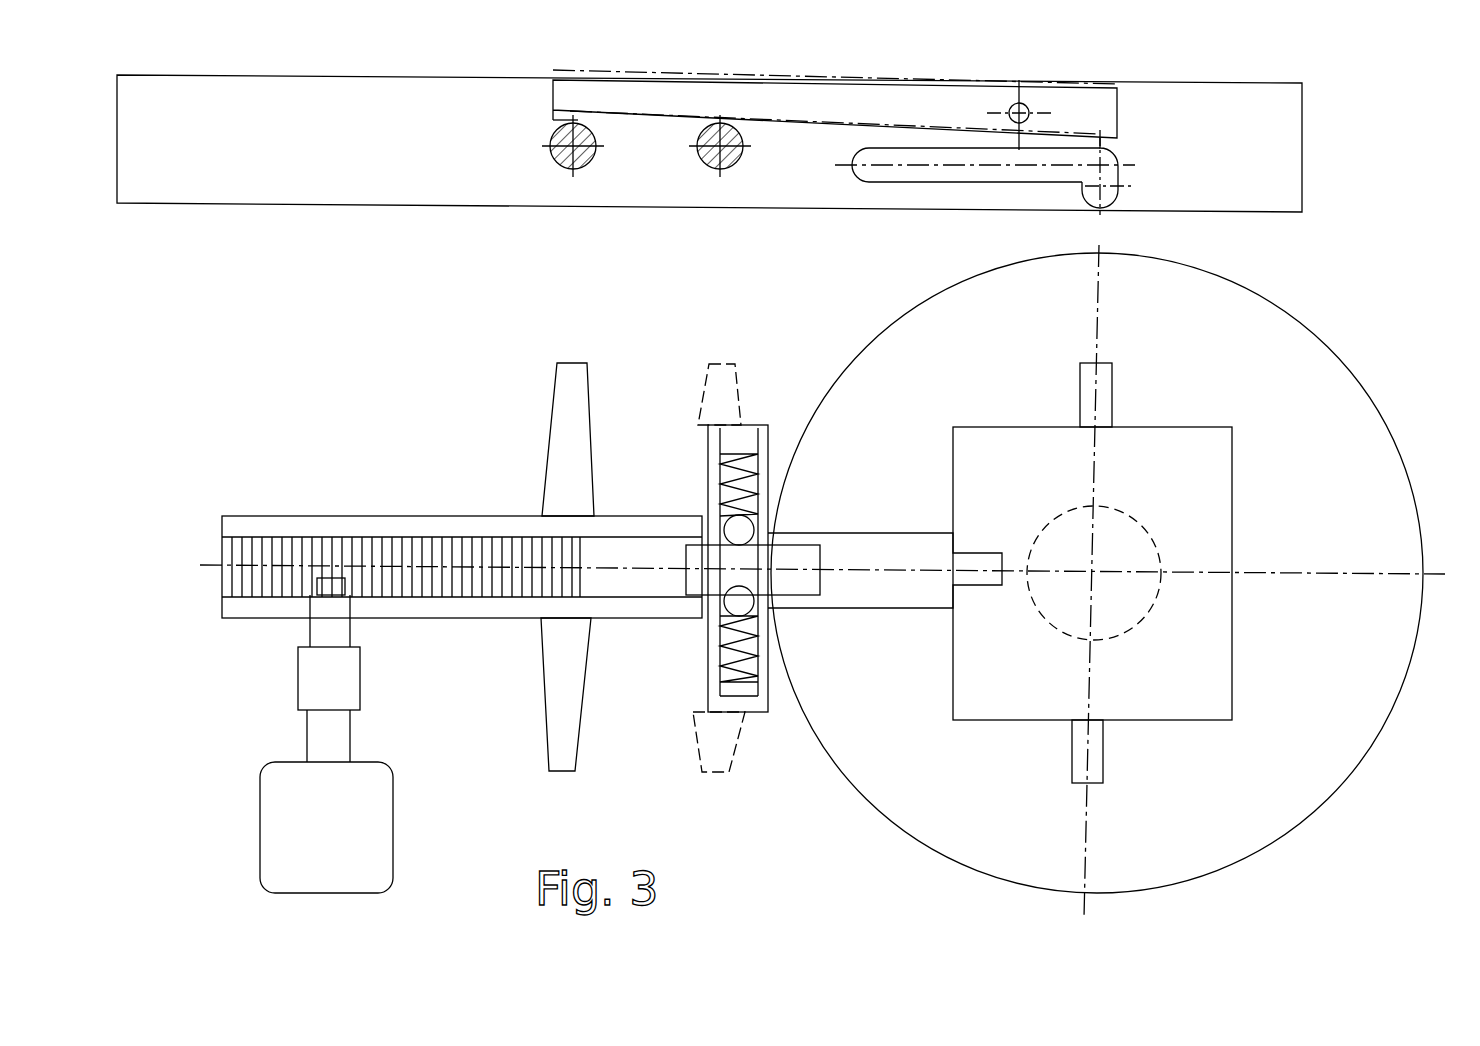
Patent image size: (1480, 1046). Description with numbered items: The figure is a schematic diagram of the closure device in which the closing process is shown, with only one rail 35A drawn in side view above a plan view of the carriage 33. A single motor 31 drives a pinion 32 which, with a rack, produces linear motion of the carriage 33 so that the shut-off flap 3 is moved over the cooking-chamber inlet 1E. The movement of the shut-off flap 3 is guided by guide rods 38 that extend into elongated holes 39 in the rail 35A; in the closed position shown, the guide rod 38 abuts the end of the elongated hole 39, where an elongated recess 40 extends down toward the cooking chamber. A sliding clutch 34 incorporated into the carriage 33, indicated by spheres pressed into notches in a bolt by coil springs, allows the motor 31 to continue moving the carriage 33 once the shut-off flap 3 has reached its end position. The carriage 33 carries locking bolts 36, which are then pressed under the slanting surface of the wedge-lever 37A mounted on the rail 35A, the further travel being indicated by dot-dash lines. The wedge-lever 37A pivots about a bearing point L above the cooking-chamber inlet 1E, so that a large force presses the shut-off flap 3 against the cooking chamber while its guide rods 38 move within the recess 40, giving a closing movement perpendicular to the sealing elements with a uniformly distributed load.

The motor 31 is at (333, 818).
The pinion 32 is at (310, 596).
The carriage 33 is at (312, 525).
The sliding clutch 34 is at (706, 672).
The rail 35A is at (307, 173).
The locking bolts 36 is at (483, 788).
The wedge-lever 37A is at (760, 108).
The guide rods 38 is at (1105, 385).
The elongated holes 39 is at (937, 172).
The elongated recess 40 is at (1115, 197).
The shut-off flap 3 is at (1115, 588).
The cooking-chamber inlet 1E is at (1120, 560).
The bearing point L is at (1030, 110).